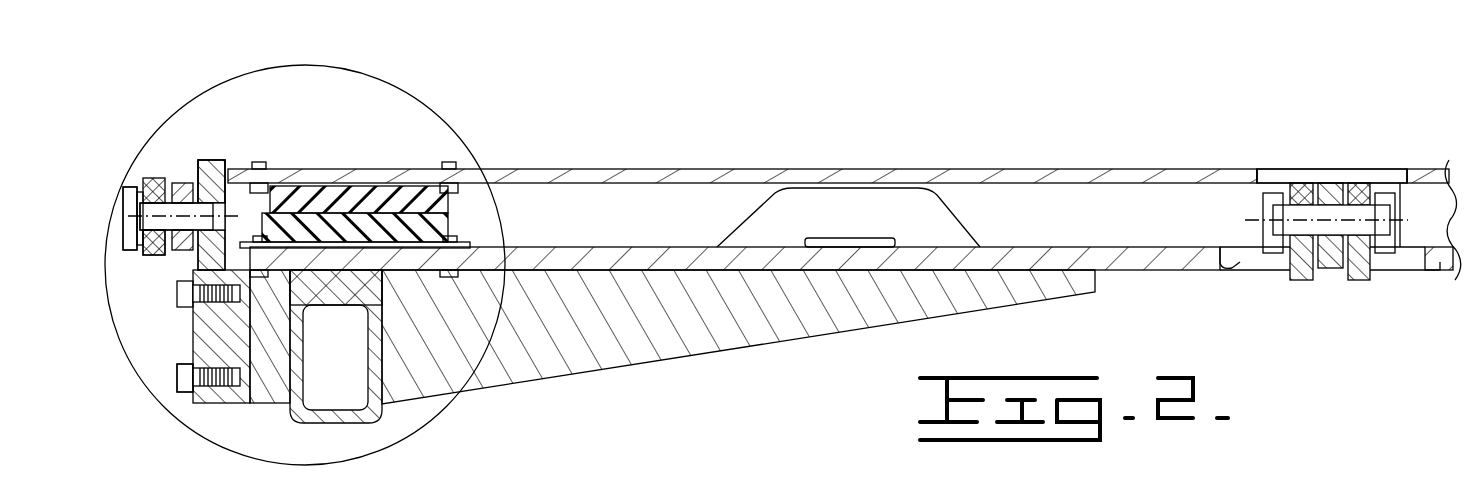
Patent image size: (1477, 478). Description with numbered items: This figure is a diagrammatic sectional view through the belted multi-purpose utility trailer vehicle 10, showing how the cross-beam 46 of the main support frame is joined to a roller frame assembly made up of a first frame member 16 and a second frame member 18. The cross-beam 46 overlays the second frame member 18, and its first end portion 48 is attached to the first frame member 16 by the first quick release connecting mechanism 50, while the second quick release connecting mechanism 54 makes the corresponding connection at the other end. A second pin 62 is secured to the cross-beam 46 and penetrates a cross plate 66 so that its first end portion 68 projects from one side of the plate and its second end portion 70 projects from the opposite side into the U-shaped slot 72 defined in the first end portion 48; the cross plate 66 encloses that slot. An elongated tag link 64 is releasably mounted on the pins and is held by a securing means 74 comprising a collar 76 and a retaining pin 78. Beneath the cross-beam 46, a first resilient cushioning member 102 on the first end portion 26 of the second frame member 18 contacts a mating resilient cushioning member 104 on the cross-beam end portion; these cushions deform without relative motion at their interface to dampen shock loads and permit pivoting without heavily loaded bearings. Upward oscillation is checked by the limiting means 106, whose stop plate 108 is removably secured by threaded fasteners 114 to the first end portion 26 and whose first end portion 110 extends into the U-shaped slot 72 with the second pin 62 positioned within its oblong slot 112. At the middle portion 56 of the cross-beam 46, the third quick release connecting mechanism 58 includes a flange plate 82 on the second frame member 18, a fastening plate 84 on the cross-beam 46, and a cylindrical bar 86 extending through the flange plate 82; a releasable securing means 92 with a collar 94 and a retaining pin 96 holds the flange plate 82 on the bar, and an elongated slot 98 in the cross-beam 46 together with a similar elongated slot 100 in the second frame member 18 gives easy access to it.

The belted multi-purpose utility trailer vehicle 10 is at (560, 372).
The first frame member 16 is at (382, 412).
The second frame member 18 is at (637, 250).
The first end portion 26 is at (401, 284).
The cross-beam 46 is at (548, 169).
The first end portion 48 is at (279, 163).
The first rapid or quick release connecting mechanism 50 is at (170, 146).
The second rapid or quick release connecting mechanism 54 is at (222, 122).
The middle portion 56 is at (1430, 134).
The third rapid or quick release connecting mechanism 58 is at (1412, 196).
The second pin 62 is at (193, 266).
The elongated tag link 64 is at (162, 177).
The cross plate 66 is at (183, 182).
The first end portion 68 is at (122, 253).
The second end portion 70 is at (240, 210).
The U-shaped slot 72 is at (266, 298).
The securing means 74 is at (148, 322).
The collar 76 is at (126, 246).
The retaining pin 78 is at (146, 178).
The flange plate 82 is at (1296, 278).
The fastening plate 84 is at (1328, 186).
The cylindrical bar 86 is at (1270, 212).
The releasable securing means 92 is at (1318, 292).
The collar 94 is at (1262, 232).
The retaining pin 96 is at (1292, 182).
The elongated slot 98 is at (1264, 168).
The elongated slot 100 is at (1235, 266).
The first resilient cushioning member 102 is at (462, 222).
The resilient cushioning member 104 is at (382, 190).
The limiting means 106 is at (247, 211).
The stop plate 108 is at (180, 380).
The first end portion 110 is at (232, 156).
The oblong slot 112 is at (196, 284).
The threaded fasteners 114 is at (222, 298).